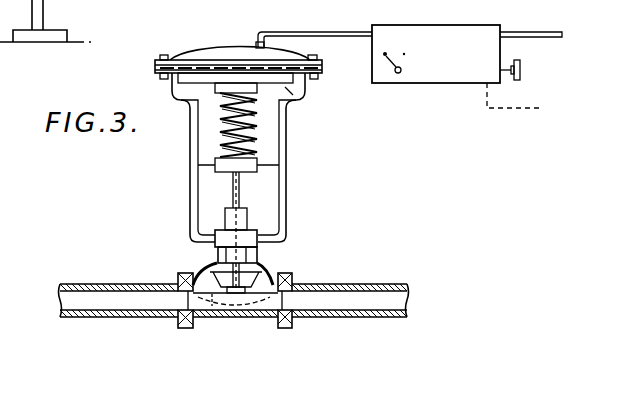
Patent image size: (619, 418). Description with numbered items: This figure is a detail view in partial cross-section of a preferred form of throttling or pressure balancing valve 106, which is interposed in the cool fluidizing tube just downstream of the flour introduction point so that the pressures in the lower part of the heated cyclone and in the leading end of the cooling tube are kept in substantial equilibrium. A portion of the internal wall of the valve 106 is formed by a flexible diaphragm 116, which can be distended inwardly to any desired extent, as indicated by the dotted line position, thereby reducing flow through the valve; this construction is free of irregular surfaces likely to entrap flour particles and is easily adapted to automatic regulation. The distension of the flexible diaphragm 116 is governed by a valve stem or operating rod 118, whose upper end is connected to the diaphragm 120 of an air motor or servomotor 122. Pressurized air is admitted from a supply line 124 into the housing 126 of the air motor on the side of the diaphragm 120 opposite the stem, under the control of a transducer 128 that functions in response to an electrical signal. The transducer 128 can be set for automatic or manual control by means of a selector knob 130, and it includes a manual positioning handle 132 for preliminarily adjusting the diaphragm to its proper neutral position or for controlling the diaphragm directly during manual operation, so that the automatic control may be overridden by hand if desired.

The throttling valve 106 is at (254, 318).
The flexible diaphragm 116 is at (215, 309).
The valve stem 118 is at (236, 203).
The diaphragm 120 is at (306, 103).
The air motor 122 is at (199, 87).
The supply line 124 is at (557, 38).
The housing 126 is at (186, 52).
The transducer 128 is at (467, 78).
The selector knob 130 is at (391, 70).
The manual positioning handle 132 is at (520, 77).